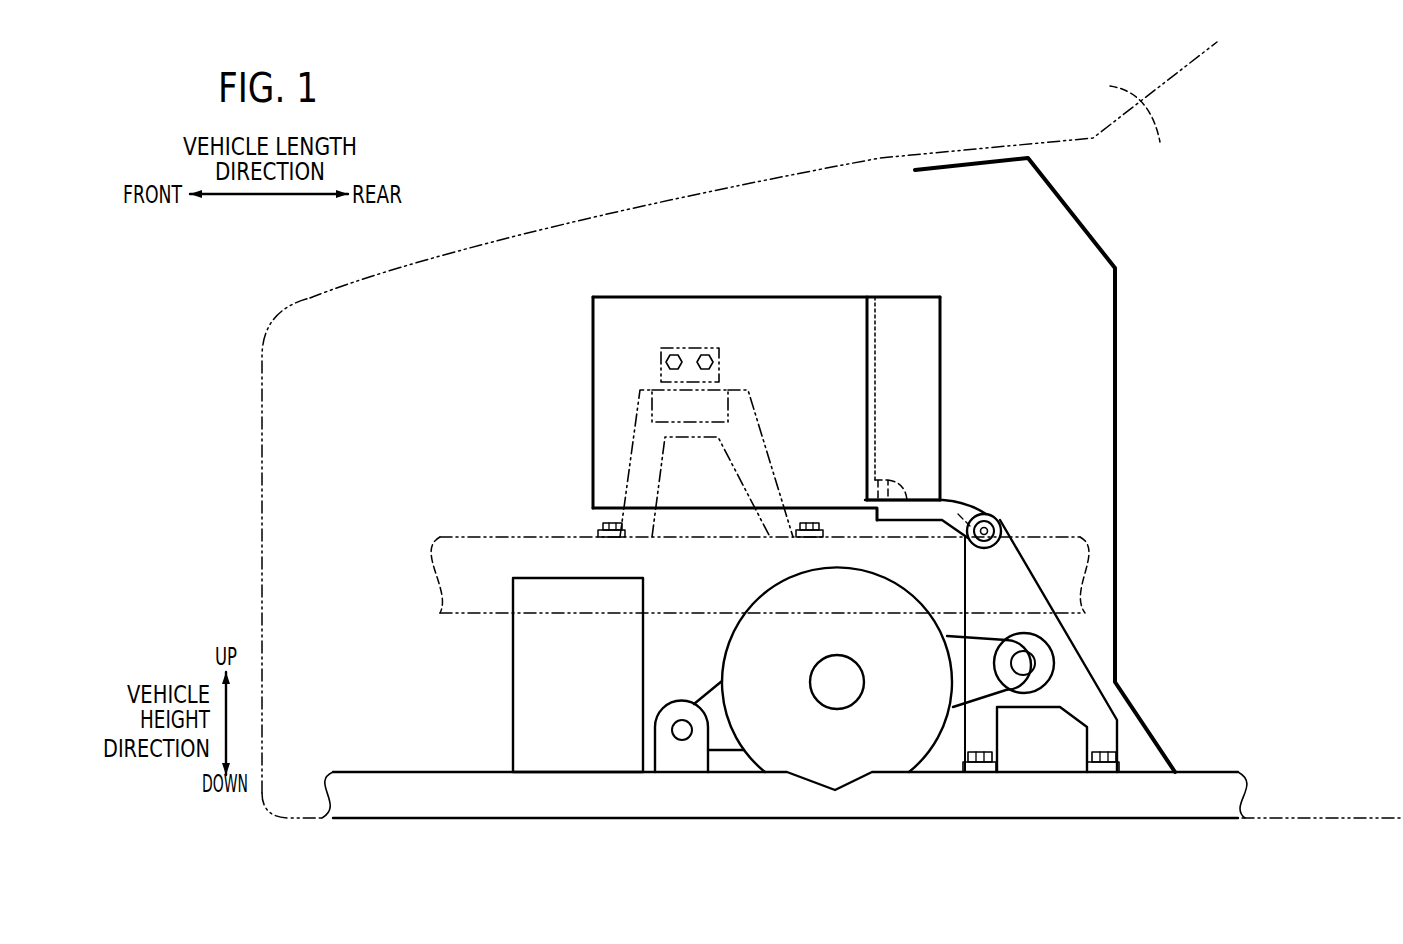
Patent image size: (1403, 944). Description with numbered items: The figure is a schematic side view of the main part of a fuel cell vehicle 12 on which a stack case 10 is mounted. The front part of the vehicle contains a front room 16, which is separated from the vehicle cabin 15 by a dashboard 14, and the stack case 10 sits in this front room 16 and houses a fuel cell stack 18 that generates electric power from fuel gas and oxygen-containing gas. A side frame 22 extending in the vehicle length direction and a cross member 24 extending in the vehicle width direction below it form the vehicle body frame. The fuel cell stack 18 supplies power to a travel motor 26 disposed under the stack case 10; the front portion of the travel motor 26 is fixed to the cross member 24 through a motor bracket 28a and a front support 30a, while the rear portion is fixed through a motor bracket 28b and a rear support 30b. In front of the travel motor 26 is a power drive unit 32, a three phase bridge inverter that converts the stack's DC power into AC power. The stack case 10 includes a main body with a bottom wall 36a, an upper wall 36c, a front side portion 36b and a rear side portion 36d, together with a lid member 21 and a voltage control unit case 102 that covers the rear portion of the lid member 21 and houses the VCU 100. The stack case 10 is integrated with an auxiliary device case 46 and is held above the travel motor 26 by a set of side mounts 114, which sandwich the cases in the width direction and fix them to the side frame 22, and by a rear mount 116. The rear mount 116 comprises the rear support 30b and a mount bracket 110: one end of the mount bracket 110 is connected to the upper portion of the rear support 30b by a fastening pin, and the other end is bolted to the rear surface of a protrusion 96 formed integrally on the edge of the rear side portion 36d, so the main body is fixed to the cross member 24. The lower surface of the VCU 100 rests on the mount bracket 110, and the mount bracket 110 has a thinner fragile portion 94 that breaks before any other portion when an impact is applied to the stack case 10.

The stack case 10 is at (580, 368).
The fuel cell vehicle 12 is at (254, 297).
The dashboard 14 is at (1116, 305).
The vehicle cabin 15 is at (1110, 86).
The front room 16 is at (851, 195).
The fuel cell stack 18 is at (620, 417).
The lid member 21 is at (870, 295).
The side frame 22 is at (463, 552).
The cross member 24 is at (390, 783).
The travel motor 26 is at (878, 760).
The motor bracket 28a is at (708, 700).
The motor bracket 28b is at (972, 660).
The front support 30a is at (667, 747).
The rear support 30b is at (1072, 661).
The power drive unit 32 is at (512, 663).
The bottom wall 36a is at (698, 511).
The front side portion 36b is at (593, 333).
The upper wall 36c is at (703, 297).
The rear side portion 36d is at (867, 350).
The auxiliary device case 46 is at (623, 463).
The fragile portion 94 is at (962, 540).
The protrusion 96 is at (877, 487).
The VCU 100 is at (900, 422).
The voltage control unit case 102 is at (915, 297).
The mount bracket 110 is at (945, 507).
The side mount 114 is at (746, 375).
The rear mount 116 is at (1009, 497).